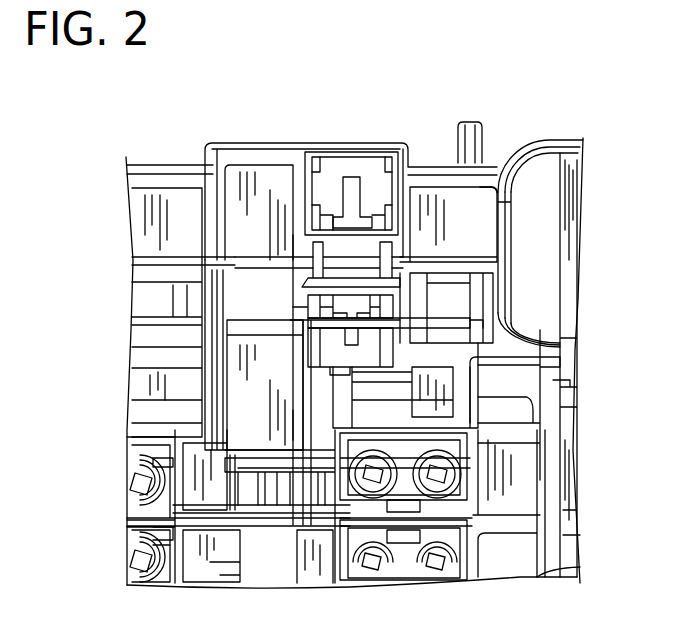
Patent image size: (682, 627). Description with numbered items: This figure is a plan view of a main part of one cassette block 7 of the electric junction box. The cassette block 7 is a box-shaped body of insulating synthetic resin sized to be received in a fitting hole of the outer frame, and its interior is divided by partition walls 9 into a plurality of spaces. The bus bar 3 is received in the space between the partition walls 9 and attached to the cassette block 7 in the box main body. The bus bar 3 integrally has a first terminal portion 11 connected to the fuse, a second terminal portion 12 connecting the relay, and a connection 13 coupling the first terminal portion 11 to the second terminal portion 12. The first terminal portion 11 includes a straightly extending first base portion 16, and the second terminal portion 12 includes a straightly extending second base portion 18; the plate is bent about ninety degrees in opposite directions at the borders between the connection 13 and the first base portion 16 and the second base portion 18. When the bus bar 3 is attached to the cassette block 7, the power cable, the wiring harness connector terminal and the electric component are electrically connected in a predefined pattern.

The bus bar 3 is at (261, 306).
The cassette block 7 is at (352, 128).
The partition walls 9 is at (213, 313).
The first terminal portion 11 is at (446, 314).
The second terminal portion 12 is at (433, 473).
The connection 13 is at (263, 405).
The first base portion 16 is at (393, 328).
The second base portion 18 is at (345, 465).